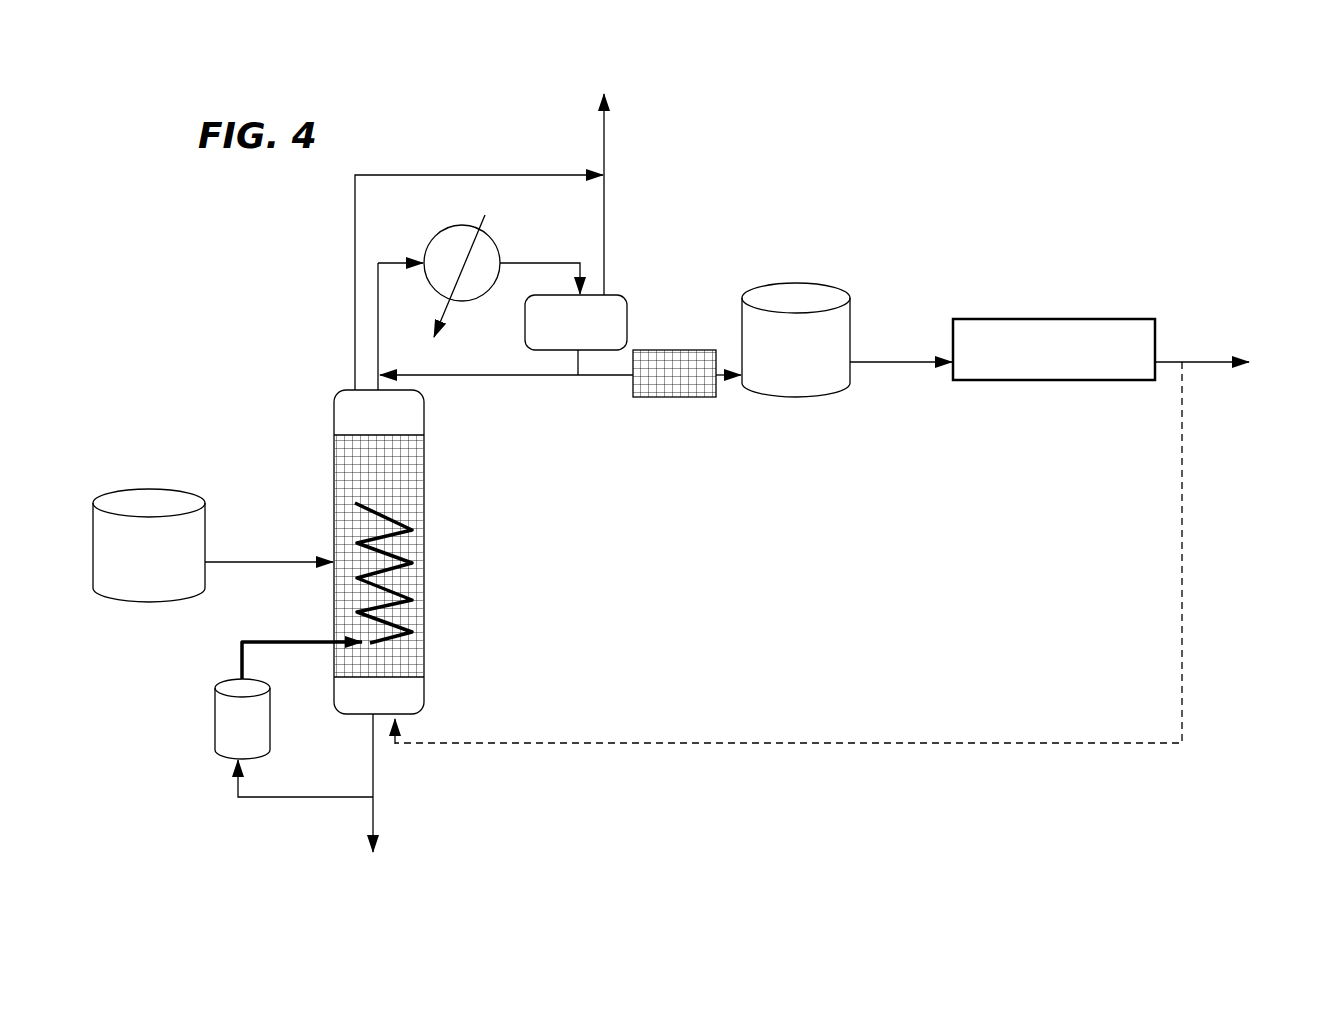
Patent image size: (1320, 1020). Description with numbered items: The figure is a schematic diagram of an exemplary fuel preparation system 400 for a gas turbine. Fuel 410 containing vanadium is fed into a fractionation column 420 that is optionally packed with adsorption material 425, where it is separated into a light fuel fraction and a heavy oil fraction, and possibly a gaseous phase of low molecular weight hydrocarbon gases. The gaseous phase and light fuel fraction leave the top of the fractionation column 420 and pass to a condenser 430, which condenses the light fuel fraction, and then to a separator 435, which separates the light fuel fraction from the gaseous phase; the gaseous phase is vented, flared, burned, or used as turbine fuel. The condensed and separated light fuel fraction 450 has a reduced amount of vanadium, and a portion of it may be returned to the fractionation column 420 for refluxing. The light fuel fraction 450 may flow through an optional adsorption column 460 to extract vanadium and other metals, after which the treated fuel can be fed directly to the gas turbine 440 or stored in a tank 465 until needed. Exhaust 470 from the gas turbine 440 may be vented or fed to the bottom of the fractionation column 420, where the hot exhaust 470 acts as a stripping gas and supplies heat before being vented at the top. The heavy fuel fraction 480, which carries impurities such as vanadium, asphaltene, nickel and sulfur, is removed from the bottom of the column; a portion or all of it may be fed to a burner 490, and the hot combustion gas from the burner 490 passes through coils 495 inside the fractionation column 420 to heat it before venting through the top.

The fuel preparation system 400 is at (792, 165).
The fuel 410 is at (128, 567).
The fractionation column 420 is at (404, 420).
The adsorption material 425 is at (334, 470).
The condenser 430 is at (507, 252).
The separator 435 is at (556, 334).
The gas turbine 440 is at (1034, 362).
The light fuel fraction 450 is at (553, 391).
The adsorption column 460 is at (716, 392).
The tank 465 is at (776, 353).
The exhaust 470 is at (1190, 580).
The heavy fuel fraction 480 is at (372, 761).
The burner 490 is at (207, 695).
The coils 495 is at (399, 609).